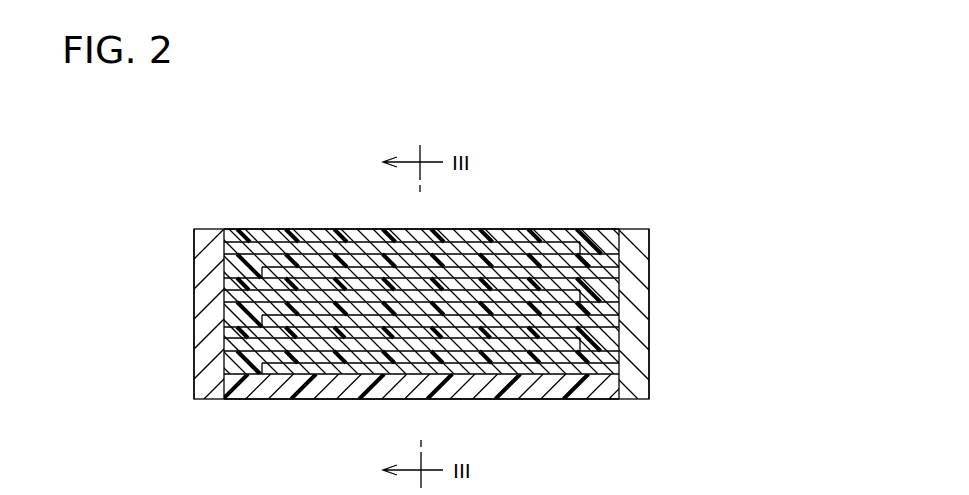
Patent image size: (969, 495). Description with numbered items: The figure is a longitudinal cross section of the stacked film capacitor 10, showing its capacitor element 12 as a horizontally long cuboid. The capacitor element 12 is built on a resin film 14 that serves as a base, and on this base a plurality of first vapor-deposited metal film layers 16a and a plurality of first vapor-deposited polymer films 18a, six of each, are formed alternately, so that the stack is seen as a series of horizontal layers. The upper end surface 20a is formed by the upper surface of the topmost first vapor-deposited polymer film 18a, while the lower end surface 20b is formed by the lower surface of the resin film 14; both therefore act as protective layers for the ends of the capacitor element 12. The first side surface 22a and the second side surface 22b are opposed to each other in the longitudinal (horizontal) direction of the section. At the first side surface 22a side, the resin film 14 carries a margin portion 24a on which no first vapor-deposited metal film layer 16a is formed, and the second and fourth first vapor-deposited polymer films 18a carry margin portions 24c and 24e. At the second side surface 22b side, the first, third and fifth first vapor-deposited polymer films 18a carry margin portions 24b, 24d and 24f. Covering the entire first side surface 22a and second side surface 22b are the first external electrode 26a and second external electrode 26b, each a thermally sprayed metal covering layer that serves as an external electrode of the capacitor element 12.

The stacked film capacitor 10 is at (518, 148).
The capacitor element 12 is at (387, 220).
The resin film 14 is at (315, 388).
The first vapor-deposited metal film layer 16a is at (227, 422).
The first vapor-deposited polymer film 18a is at (497, 232).
The upper end surface 20a is at (347, 228).
The lower end surface 20b is at (486, 399).
The first side surface 22a is at (222, 284).
The second side surface 22b is at (619, 316).
The margin portion 24a is at (240, 368).
The margin portion 24b is at (604, 345).
The margin portion 24c is at (243, 318).
The margin portion 24d is at (604, 296).
The margin portion 24e is at (230, 252).
The margin portion 24f is at (604, 250).
The first external electrode 26a is at (206, 388).
The second external electrode 26b is at (640, 362).